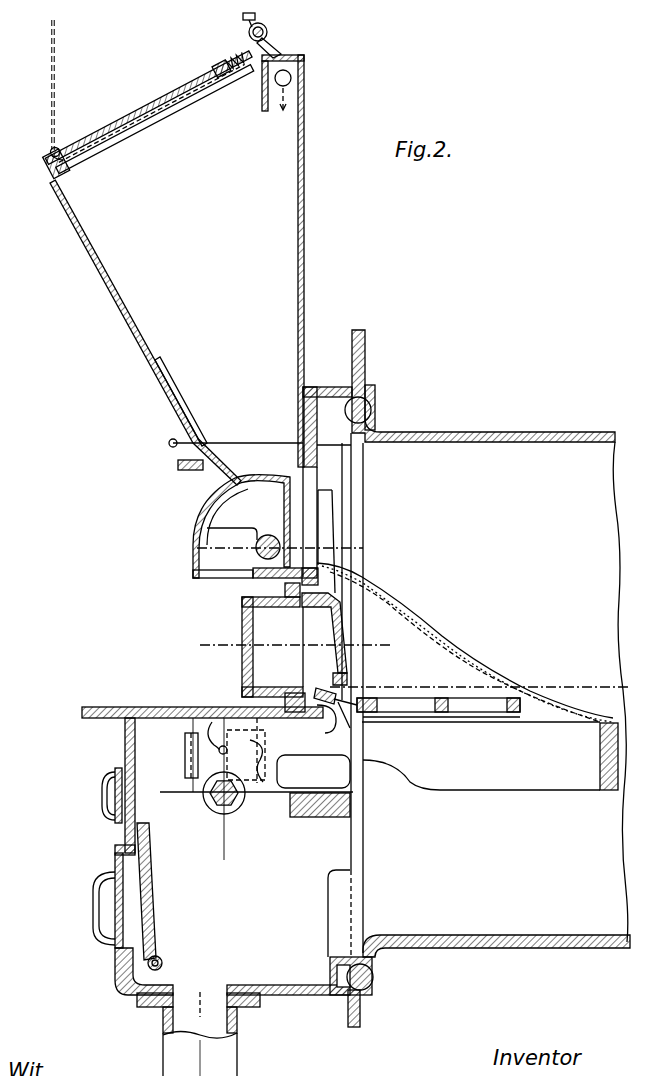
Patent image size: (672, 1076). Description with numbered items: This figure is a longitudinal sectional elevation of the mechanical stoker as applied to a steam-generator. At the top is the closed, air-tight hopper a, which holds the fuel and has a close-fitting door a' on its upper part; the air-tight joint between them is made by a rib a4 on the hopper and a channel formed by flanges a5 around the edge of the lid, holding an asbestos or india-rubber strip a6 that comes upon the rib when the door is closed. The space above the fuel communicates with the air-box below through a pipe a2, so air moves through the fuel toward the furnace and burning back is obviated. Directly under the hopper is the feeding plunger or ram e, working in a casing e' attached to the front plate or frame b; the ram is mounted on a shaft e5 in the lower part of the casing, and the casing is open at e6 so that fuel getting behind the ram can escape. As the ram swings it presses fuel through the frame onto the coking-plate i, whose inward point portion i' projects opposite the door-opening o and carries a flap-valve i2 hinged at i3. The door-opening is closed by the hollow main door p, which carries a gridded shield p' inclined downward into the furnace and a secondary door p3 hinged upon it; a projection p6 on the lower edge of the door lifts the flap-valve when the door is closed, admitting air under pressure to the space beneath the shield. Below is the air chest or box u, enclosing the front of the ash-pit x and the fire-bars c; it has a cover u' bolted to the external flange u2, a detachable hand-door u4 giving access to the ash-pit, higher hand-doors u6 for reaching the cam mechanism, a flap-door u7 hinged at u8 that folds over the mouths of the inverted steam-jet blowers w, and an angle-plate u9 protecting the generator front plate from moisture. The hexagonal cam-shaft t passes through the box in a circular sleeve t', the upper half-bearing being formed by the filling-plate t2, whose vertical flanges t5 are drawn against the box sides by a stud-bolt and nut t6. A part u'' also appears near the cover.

The hopper a is at (177, 270).
The door a' is at (149, 109).
The pipe a2 is at (289, 78).
The rib a4 is at (247, 75).
The flanges a5 is at (233, 66).
The strip a6 is at (241, 52).
The front plate or frame b is at (303, 418).
The fire-bars c is at (465, 641).
The feeding plunger or ram e is at (278, 526).
The casing e' is at (202, 517).
The shaft e5 is at (262, 557).
The opening e6 is at (210, 573).
The main door p is at (296, 640).
The gridded shield p' is at (342, 639).
The secondary door p3 is at (243, 630).
The projection p6 is at (330, 732).
The door-opening o is at (307, 648).
The coking-plate i is at (480, 695).
The inward point portion i' is at (352, 724).
The flap-valve i2 is at (326, 688).
The hinge i3 is at (360, 700).
The ash-pit x is at (496, 919).
The air chest or box u is at (232, 928).
The lid or cover u' is at (202, 699).
The bracket u'' is at (248, 692).
The external flange u2 is at (84, 723).
The hand-door u4 is at (115, 928).
The hand-doors u6 is at (115, 808).
The flap-door u7 is at (150, 914).
The hinge u8 is at (165, 963).
The angle-plate u9 is at (333, 905).
The steam-jet blowers w is at (240, 1058).
The cam-shaft t is at (207, 789).
The sleeve t' is at (256, 812).
The filling-plate t2 is at (207, 753).
The vertical flanges t5 is at (268, 760).
The stud-bolt and nut t6 is at (226, 753).